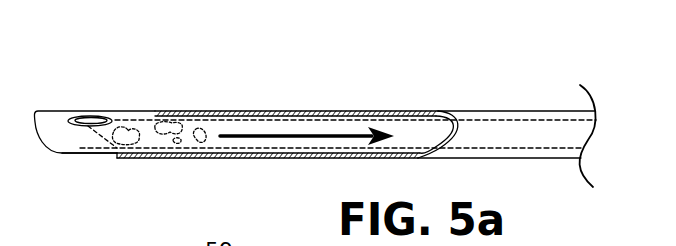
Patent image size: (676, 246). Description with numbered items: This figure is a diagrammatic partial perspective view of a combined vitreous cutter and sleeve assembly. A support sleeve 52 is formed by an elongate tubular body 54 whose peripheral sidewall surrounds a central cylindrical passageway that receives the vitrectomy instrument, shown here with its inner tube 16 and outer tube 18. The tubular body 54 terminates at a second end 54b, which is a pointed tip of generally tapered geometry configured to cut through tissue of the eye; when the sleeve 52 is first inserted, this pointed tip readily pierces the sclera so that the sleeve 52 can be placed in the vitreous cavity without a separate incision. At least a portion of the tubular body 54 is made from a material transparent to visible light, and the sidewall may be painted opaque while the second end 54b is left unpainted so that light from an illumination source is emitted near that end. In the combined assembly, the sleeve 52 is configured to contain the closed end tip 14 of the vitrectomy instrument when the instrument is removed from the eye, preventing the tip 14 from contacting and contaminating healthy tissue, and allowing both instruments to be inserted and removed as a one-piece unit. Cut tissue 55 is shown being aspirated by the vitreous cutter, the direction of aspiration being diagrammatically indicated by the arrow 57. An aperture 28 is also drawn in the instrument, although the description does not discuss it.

The closed end tip 14 is at (42, 138).
The inner tube 16 is at (275, 128).
The outer tube 18 is at (77, 155).
The side aperture 28 is at (81, 122).
The support sleeve 52 is at (397, 111).
The elongate tubular body 54 is at (417, 159).
The second end 54b is at (119, 157).
The cut tissue 55 is at (130, 130).
The arrow 57 is at (293, 134).